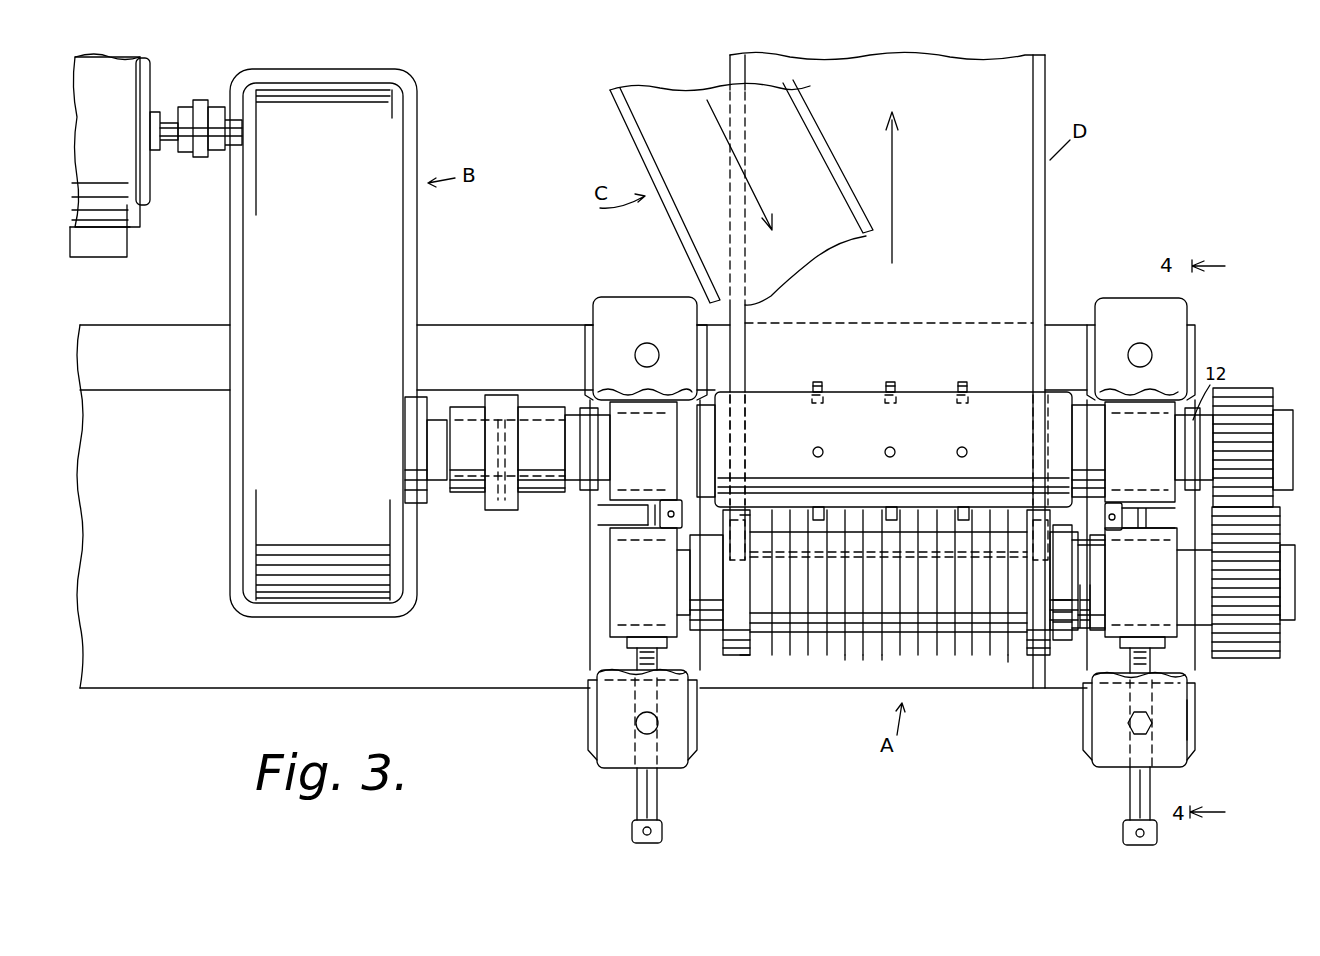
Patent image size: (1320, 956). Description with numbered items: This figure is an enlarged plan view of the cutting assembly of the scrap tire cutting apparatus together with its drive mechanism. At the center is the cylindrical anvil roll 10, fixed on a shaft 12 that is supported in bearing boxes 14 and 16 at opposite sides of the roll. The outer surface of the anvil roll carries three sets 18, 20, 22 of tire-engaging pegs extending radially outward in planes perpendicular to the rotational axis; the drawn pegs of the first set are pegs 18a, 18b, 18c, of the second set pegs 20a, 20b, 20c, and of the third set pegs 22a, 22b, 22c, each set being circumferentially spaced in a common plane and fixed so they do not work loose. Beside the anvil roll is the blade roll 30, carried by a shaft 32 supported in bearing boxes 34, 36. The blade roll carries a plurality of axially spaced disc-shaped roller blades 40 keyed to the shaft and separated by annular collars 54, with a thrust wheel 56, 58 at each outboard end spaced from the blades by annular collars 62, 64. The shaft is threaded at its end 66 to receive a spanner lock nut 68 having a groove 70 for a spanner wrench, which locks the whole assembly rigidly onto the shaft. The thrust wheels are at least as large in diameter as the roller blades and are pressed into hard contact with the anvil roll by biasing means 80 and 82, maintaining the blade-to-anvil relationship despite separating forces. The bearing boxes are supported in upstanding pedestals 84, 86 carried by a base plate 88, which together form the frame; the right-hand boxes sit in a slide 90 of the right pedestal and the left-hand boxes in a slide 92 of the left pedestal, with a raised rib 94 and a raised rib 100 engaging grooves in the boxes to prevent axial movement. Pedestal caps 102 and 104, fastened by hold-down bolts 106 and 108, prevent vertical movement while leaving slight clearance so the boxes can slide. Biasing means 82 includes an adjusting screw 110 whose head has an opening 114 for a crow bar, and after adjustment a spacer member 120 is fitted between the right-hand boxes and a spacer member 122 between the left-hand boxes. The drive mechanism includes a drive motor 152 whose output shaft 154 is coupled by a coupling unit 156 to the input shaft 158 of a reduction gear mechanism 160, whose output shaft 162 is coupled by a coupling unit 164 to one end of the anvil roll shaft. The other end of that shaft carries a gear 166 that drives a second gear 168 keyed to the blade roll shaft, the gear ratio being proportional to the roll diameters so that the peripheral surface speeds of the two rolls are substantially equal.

The anvil roll 10 is at (1013, 385).
The shaft 12 is at (585, 420).
The bearing box 14 is at (656, 456).
The bearing box 16 is at (1156, 454).
The set of pegs 18 is at (820, 373).
The peg 18a is at (823, 386).
The peg 18b is at (823, 450).
The peg 18c is at (827, 505).
The set of pegs 20 is at (899, 374).
The peg 20a is at (896, 388).
The peg 20b is at (896, 449).
The peg 20c is at (897, 505).
The set of pegs 22 is at (972, 374).
The peg 22a is at (958, 382).
The peg 22b is at (968, 449).
The peg 22c is at (972, 505).
The blade roll 30 is at (833, 709).
The shaft 32 is at (605, 600).
The bearing box 34 is at (656, 589).
The bearing box 36 is at (1154, 598).
The roller blades 40 is at (972, 655).
The annular collars 54 is at (888, 648).
The thrust wheel 56 is at (752, 660).
The thrust wheel 58 is at (1040, 660).
The annular collar 62 is at (754, 660).
The annular collar 64 is at (1030, 658).
The threaded end 66 is at (1072, 640).
The spanner lock nut 68 is at (1053, 635).
The groove 70 is at (1090, 590).
The biasing means 80 is at (599, 794).
The biasing means 82 is at (1104, 780).
The pedestal 84 is at (592, 335).
The pedestal 86 is at (1192, 343).
The base plate 88 is at (425, 688).
The slide 90 is at (1197, 665).
The slide 92 is at (598, 520).
The raised rib 94 is at (1148, 517).
The raised rib 100 is at (640, 515).
The pedestal cap 102 is at (645, 302).
The pedestal cap 104 is at (1172, 314).
The hold-down bolts 106 is at (647, 350).
The hold-down bolts 108 is at (1140, 348).
The adjusting screw 110 is at (1130, 797).
The opening 114 is at (1125, 833).
The spacer member 120 is at (1112, 500).
The spacer member 122 is at (667, 498).
The drive motor 152 is at (140, 82).
The output shaft 154 is at (170, 125).
The coupling unit 156 is at (208, 158).
The input shaft 158 is at (228, 152).
The reduction gear mechanism 160 is at (258, 262).
The output shaft 162 is at (460, 425).
The coupling unit 164 is at (497, 500).
The gear 166 is at (1247, 396).
The gear 168 is at (1270, 658).